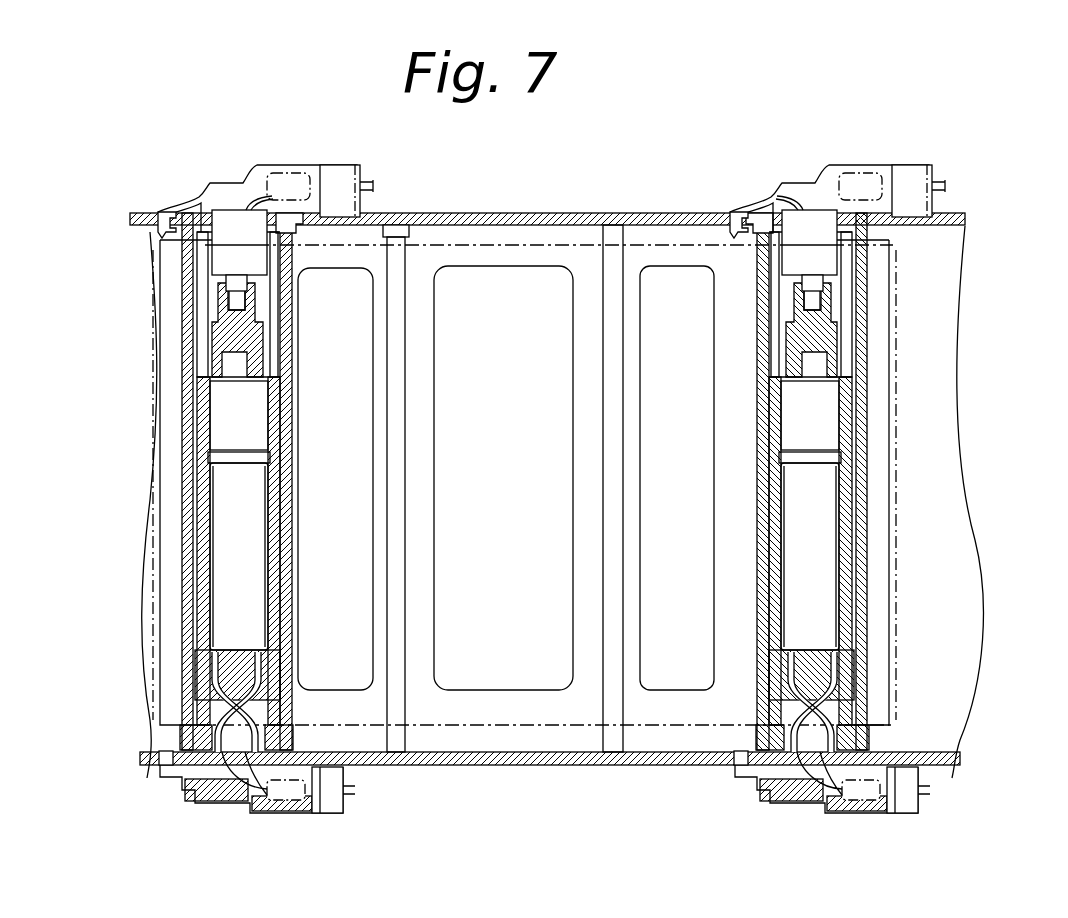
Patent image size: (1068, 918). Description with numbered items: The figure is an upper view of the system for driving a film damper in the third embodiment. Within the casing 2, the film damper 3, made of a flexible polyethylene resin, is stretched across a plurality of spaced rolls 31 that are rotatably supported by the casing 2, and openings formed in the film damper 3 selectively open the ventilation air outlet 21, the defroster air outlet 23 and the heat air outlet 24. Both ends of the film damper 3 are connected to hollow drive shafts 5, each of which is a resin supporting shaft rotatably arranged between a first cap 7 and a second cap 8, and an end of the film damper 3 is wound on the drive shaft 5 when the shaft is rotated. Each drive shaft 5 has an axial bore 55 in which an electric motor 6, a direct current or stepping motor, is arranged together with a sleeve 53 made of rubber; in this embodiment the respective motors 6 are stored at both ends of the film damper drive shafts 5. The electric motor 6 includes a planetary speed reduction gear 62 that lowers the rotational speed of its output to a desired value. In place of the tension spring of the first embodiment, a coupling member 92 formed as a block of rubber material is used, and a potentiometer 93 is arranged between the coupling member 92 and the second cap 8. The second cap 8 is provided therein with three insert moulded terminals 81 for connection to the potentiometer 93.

The casing 2 is at (497, 213).
The film damper 3 is at (680, 245).
The drive shaft 5 is at (183, 316).
The electric motor 6 is at (216, 580).
The first cap 7 is at (252, 808).
The second cap 8 is at (228, 183).
The ventilation air outlet 21 is at (509, 538).
The defroster air outlet 23 is at (344, 538).
The heat air outlet 24 is at (684, 538).
The rolls 31 is at (403, 745).
The sleeve 53 is at (203, 661).
The axial bore 55 is at (232, 288).
The speed reduction gear 62 is at (217, 424).
The insert moulded terminals 81 is at (302, 170).
The coupling member 92 is at (215, 340).
The potentiometer 93 is at (226, 224).